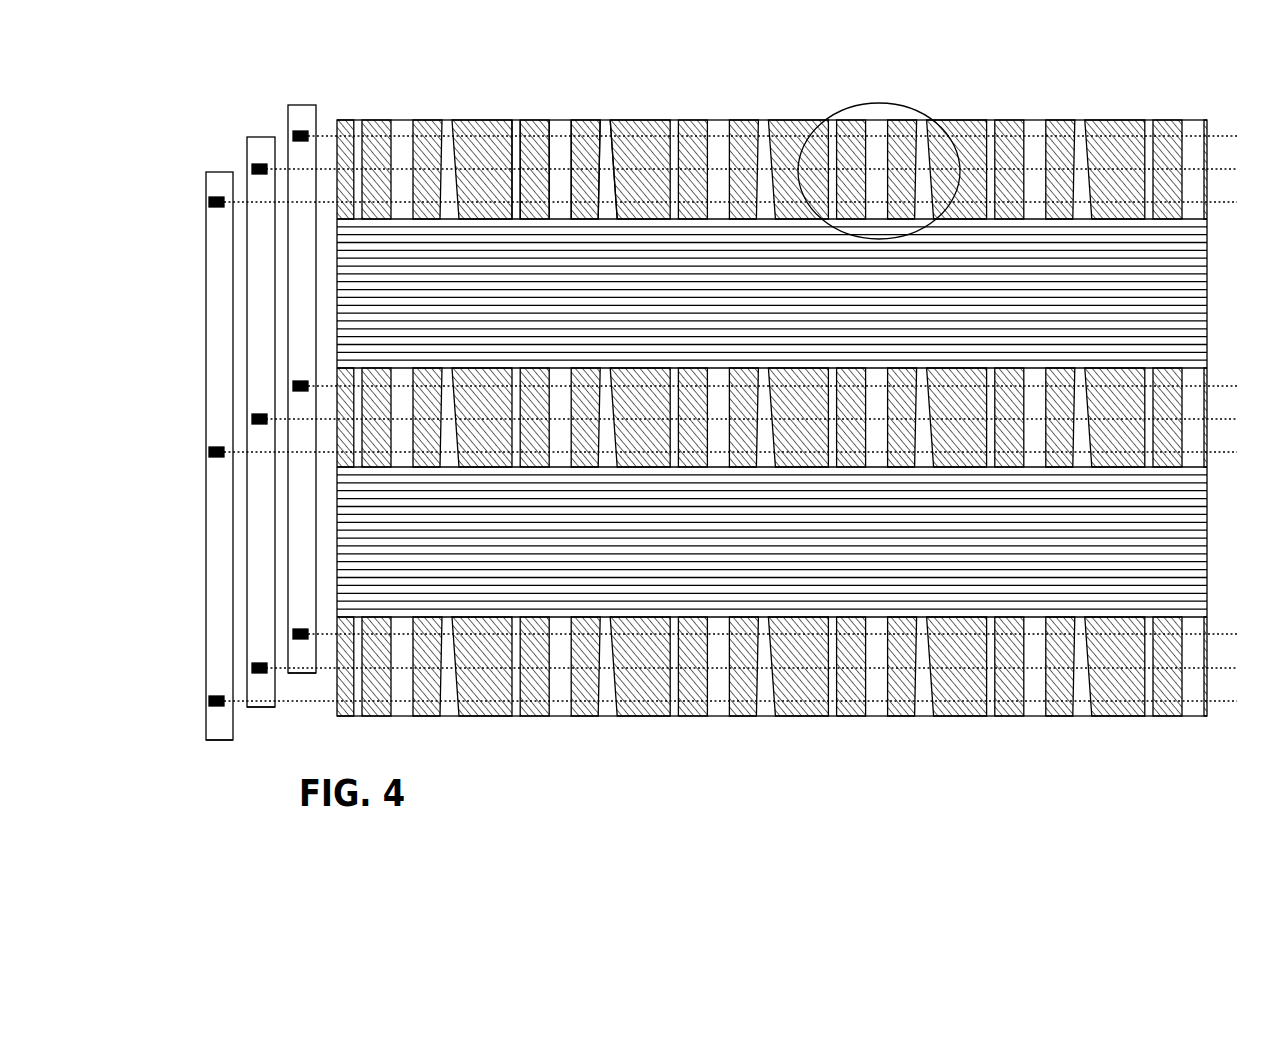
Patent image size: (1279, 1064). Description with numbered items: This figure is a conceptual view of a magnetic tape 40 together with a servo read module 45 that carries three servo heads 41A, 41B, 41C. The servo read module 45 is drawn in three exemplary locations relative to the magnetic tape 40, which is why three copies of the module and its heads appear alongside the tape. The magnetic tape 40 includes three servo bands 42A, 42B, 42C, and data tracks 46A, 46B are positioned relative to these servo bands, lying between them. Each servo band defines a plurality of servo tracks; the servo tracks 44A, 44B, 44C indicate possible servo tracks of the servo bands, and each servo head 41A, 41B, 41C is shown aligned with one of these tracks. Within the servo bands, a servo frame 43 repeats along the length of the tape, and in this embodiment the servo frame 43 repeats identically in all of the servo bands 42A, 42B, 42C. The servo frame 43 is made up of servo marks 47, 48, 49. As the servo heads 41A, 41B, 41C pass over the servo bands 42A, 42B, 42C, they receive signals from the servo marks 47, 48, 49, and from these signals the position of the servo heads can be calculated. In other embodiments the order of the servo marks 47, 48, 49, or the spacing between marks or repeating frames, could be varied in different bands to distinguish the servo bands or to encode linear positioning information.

The magnetic tape 40 is at (1152, 77).
The servo head 41A is at (300, 142).
The servo head 41B is at (300, 381).
The servo head 41C is at (300, 629).
The servo band 42A is at (1228, 175).
The servo band 42B is at (1227, 430).
The servo band 42C is at (1236, 675).
The servo frame 43 is at (868, 103).
The servo track 44A is at (302, 94).
The servo track 44B is at (262, 125).
The servo track 44C is at (221, 154).
The servo read module 45 is at (302, 674).
The data track 46A is at (1228, 273).
The data track 46B is at (1227, 526).
The servo mark 47 is at (515, 120).
The servo mark 48 is at (559, 120).
The servo mark 49 is at (607, 120).